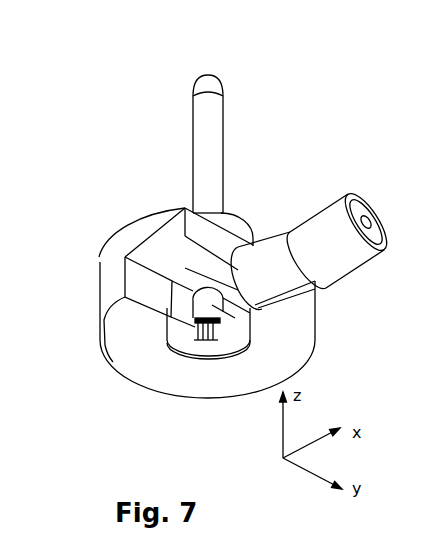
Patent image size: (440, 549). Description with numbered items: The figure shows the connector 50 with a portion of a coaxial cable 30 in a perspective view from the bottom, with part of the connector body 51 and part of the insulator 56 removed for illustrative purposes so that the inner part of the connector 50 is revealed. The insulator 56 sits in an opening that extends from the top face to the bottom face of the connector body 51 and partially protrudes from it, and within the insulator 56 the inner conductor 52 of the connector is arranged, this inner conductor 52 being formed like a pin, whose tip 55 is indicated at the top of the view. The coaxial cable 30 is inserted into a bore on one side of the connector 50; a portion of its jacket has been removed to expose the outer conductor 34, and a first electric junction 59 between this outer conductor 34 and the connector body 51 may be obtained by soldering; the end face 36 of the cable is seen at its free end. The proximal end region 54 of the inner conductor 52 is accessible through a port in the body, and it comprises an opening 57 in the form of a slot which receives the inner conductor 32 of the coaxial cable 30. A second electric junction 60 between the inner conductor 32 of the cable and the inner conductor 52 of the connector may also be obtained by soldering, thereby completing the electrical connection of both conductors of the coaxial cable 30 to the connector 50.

The coaxial cable 30 is at (313, 192).
The inner conductor of the coaxial cable 32 is at (221, 301).
The outer conductor 34 is at (285, 272).
The lens end face 36 is at (383, 228).
The connector 50 is at (127, 103).
The connector body 51 is at (145, 233).
The inner conductor 52 is at (213, 160).
The proximal end region 54 is at (190, 305).
The pin tip 55 is at (228, 83).
The insulator 56 is at (193, 283).
The opening 57 is at (232, 322).
The first electric junction 59 is at (335, 253).
The second electric junction 60 is at (197, 323).